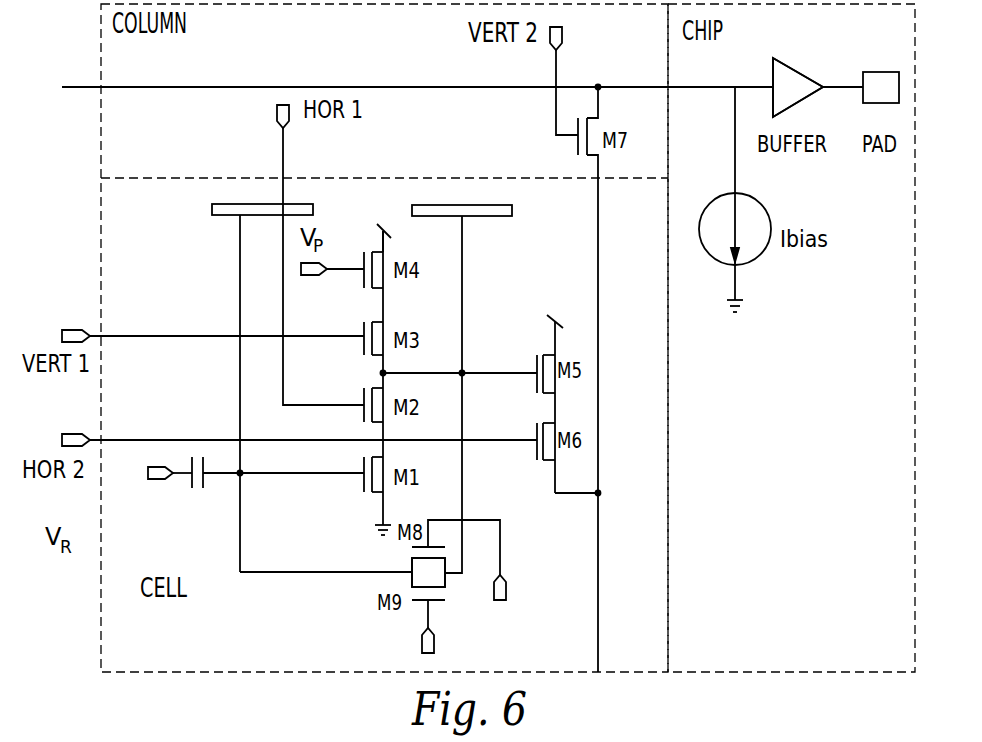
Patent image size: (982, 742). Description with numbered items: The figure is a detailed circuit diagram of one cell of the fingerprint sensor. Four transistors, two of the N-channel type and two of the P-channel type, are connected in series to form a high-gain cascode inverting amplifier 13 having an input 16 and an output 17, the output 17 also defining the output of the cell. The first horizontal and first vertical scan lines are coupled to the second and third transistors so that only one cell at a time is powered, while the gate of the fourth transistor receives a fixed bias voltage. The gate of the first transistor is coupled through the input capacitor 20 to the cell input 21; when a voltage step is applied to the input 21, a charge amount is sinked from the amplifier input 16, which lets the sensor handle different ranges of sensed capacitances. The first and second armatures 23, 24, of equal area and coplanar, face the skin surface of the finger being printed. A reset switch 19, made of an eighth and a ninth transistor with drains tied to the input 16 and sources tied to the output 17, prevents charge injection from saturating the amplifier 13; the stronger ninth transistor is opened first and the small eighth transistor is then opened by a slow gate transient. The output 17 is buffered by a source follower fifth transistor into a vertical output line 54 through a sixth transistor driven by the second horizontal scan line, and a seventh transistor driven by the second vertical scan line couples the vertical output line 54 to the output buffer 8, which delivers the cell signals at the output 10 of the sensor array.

The buffer 8 is at (800, 66).
The output 10 is at (880, 72).
The inverting amplifier 13 is at (384, 220).
The input 16 is at (243, 477).
The output 17 is at (381, 373).
The reset switch 19 is at (370, 586).
The input capacitor 20 is at (198, 490).
The input 21 is at (151, 480).
The first armature 23 is at (487, 217).
The second armature 24 is at (227, 216).
The vertical output line 54 is at (600, 302).